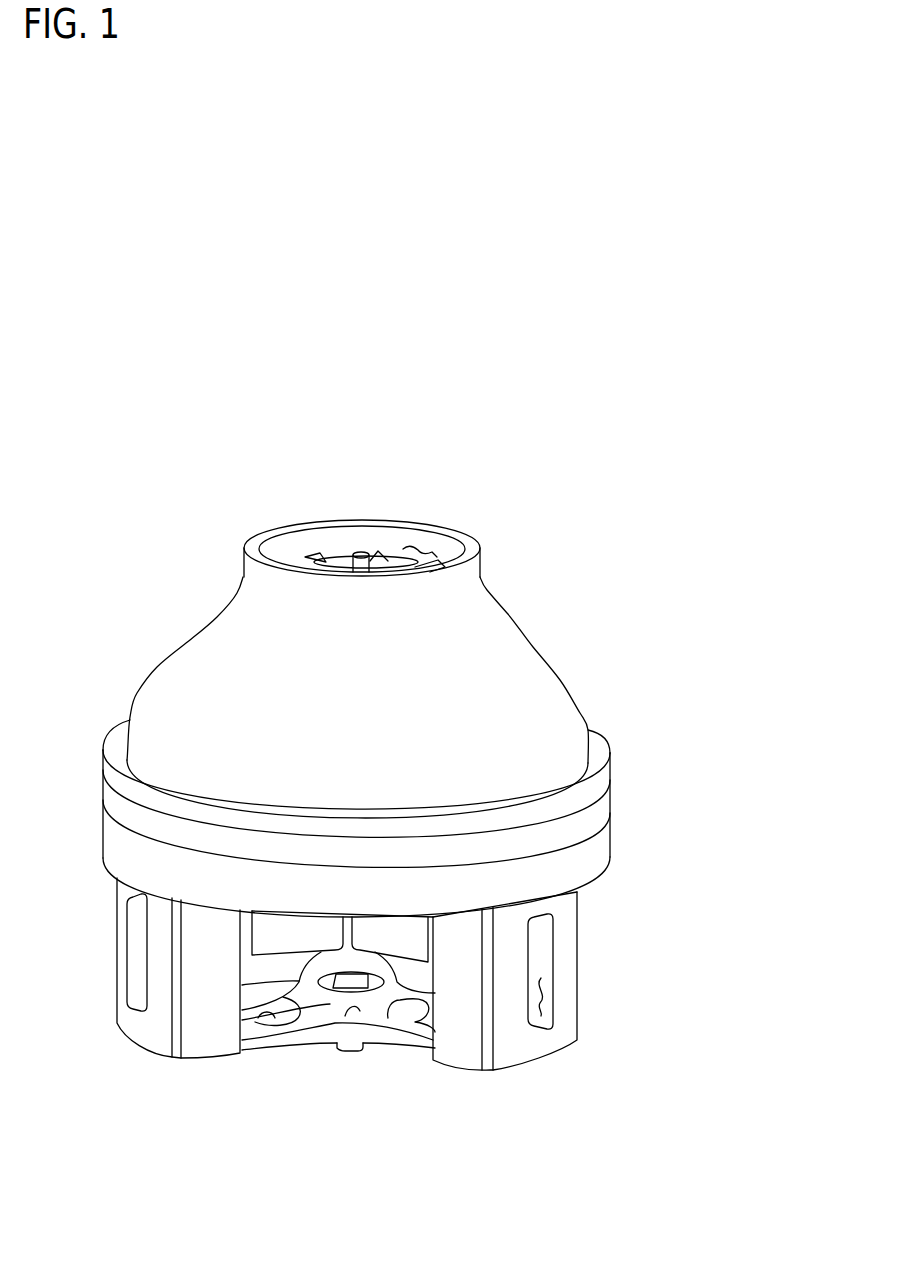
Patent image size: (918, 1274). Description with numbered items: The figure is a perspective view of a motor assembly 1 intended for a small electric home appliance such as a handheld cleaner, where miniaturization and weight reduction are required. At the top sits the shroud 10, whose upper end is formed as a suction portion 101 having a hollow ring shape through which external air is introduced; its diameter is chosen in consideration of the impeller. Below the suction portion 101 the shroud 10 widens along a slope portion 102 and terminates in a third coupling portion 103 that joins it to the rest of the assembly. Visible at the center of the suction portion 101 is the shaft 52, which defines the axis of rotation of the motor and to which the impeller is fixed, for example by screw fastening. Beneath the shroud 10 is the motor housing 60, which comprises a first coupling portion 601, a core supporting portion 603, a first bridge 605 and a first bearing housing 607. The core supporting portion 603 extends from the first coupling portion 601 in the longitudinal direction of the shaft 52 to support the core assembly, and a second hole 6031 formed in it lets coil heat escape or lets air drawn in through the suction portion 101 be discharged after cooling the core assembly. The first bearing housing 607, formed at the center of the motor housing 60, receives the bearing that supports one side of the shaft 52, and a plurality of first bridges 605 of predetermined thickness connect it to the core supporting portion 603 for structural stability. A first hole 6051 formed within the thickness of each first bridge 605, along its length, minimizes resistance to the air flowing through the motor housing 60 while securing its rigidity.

The motor assembly 1 is at (80, 518).
The shroud 10 is at (773, 480).
The suction portion 101 is at (420, 548).
The slope portion 102 is at (536, 646).
The third coupling portion 103 is at (603, 757).
The shaft 52 is at (363, 556).
The motor housing 60 is at (773, 888).
The first coupling portion 601 is at (598, 857).
The core supporting portion 603 is at (577, 960).
The second hole 6031 is at (545, 1003).
The first bridge 605 is at (418, 1032).
The first bearing housing 607 is at (345, 1012).
The first hole 6051 is at (285, 1013).